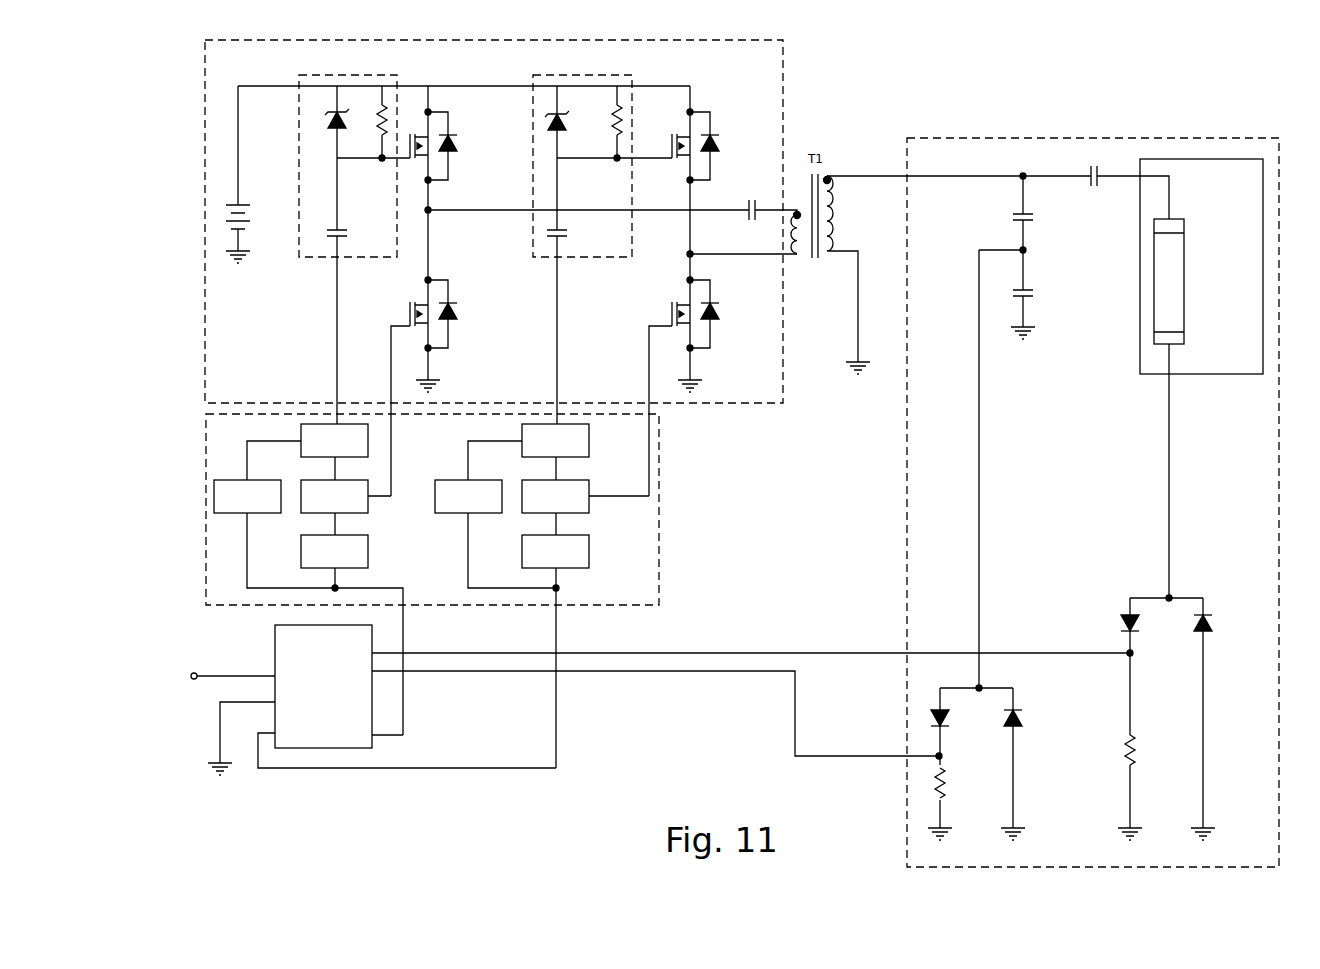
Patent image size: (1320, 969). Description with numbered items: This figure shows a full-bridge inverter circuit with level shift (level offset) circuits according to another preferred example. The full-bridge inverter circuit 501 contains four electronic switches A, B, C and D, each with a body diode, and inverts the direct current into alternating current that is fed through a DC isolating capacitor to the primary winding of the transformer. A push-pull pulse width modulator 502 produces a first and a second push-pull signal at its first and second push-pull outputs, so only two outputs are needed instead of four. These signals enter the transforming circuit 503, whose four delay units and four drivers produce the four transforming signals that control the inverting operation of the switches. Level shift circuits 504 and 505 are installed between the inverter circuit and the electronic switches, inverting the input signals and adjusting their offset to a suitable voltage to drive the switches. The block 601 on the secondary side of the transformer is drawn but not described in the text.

The full-bridge inverter circuit 501 is at (205, 160).
The push-pull pulse width modulator 502 is at (275, 641).
The transforming circuit 503 is at (206, 484).
The level shift circuit 504 is at (325, 75).
The level shift circuit 505 is at (558, 75).
The lamp load circuit 601 is at (1140, 138).